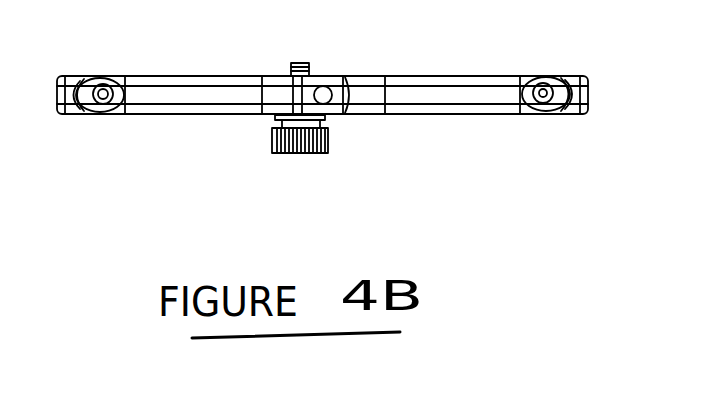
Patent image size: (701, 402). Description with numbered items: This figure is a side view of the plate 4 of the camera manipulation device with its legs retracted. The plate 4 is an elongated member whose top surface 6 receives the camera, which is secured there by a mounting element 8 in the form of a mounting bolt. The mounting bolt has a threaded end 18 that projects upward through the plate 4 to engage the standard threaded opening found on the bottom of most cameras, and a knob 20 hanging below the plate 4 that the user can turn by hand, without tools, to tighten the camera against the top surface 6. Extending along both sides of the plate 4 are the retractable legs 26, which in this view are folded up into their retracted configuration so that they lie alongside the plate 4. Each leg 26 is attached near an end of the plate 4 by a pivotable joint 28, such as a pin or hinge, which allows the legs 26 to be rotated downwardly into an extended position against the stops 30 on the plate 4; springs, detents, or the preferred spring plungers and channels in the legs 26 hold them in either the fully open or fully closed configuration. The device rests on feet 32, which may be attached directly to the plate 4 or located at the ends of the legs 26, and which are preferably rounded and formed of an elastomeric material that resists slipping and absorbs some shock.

The plate 4 is at (590, 88).
The top surface 6 is at (457, 80).
The mounting element 8 is at (328, 145).
The threaded end 18 is at (306, 66).
The knob 20 is at (292, 143).
The retractable legs 26 is at (189, 98).
The pivotable joints 28 is at (104, 92).
The stops 30 is at (76, 110).
The feet 32 is at (274, 88).